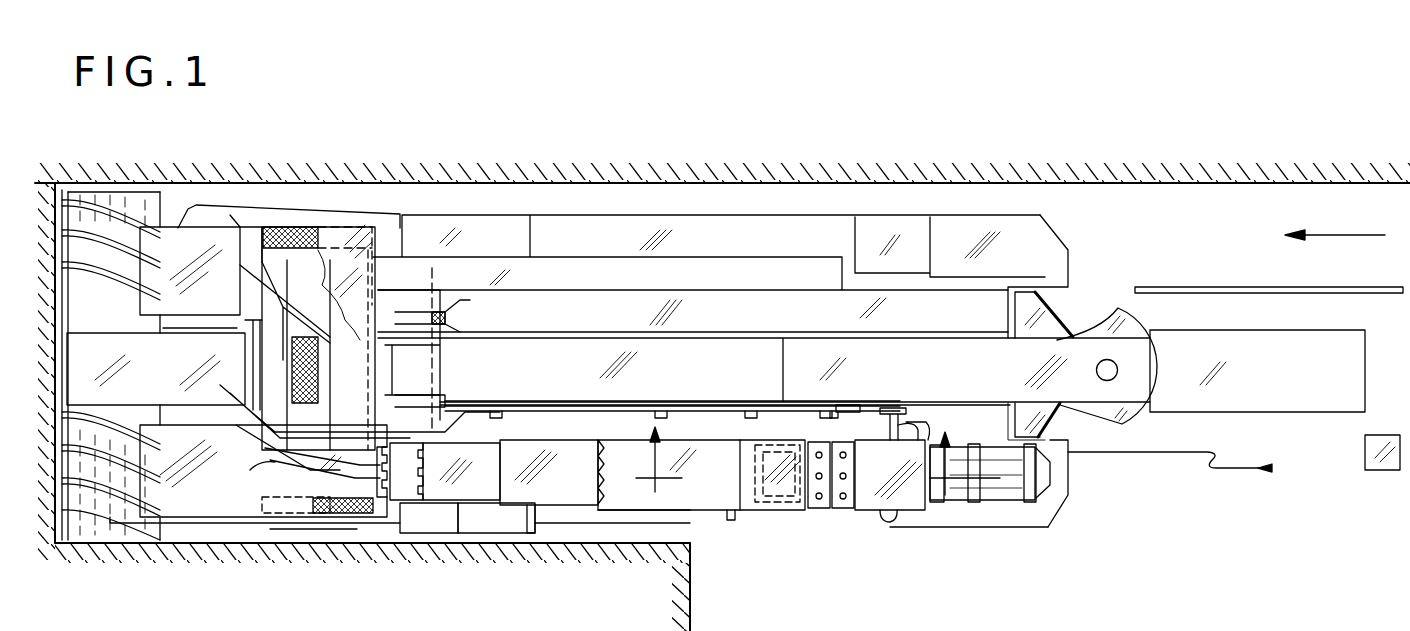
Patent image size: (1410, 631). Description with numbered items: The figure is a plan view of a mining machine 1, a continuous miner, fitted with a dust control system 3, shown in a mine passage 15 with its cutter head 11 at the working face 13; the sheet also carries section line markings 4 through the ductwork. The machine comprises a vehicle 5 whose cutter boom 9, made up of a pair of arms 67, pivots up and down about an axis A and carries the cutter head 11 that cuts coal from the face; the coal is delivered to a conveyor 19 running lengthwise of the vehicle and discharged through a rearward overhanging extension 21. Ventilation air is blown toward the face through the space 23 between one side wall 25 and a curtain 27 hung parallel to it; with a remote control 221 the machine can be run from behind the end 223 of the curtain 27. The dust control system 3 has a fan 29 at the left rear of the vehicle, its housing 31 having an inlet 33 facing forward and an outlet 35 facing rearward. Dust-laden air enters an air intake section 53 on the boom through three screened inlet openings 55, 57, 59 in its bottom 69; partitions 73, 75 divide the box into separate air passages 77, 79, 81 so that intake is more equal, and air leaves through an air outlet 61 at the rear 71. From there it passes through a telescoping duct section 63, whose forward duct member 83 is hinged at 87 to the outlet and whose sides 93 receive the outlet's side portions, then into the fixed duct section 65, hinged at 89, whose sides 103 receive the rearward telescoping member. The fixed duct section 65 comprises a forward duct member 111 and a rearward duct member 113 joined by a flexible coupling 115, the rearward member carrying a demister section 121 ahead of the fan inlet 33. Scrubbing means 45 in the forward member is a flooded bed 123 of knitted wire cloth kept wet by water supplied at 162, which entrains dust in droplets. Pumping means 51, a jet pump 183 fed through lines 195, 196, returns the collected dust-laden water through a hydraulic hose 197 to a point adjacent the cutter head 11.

The mining machine 1 is at (1068, 250).
The dust control system 3 is at (236, 503).
The section line 4- 4 is at (817, 467).
The vehicle 5 is at (743, 212).
The cutter boom 9 is at (225, 218).
The cutter head 11 is at (130, 195).
The working face 13 is at (60, 197).
The mine passage 15 is at (215, 203).
The conveyor 19 is at (723, 373).
The rearward overhanging extension 21 is at (1253, 385).
The space 23 is at (1333, 213).
The side wall 25 is at (648, 186).
The curtain 27 is at (1333, 294).
The fan 29 is at (1010, 520).
The fan housing 31 is at (982, 512).
The fan inlet 33 is at (925, 505).
The fan outlet 35 is at (1043, 472).
The scrubbing means 45 is at (778, 520).
The pumping means 51 is at (896, 414).
The air intake section 53 is at (376, 228).
The inlet opening 55 is at (300, 238).
The inlet opening 57 is at (290, 358).
The inlet opening 59 is at (345, 527).
The air outlet 61 is at (388, 503).
The telescoping duct section 63 is at (527, 515).
The fixed duct section 65 is at (625, 515).
The arms 67 is at (400, 320).
The bottom 69 is at (272, 272).
The rear 71 is at (386, 378).
The partition 73 is at (307, 315).
The partition 75 is at (262, 474).
The air passage 77 is at (339, 381).
The air passage 79 is at (282, 456).
The air passage 81 is at (325, 522).
The forward duct member 83 is at (496, 518).
The hinge 87 is at (412, 517).
The hinge 89 is at (598, 487).
The sides 93 is at (505, 432).
The sides 103 is at (674, 440).
The forward duct member 111 is at (700, 440).
The rearward duct member 113 is at (845, 512).
The flexible coupling 115 is at (824, 512).
The demister section 121 is at (905, 515).
The bed 123 is at (744, 448).
The water supply 162 is at (731, 522).
The pump 183 is at (868, 410).
The line 195 is at (872, 432).
The line 196 is at (922, 428).
The hydraulic hose 197 is at (235, 395).
The remote control 221 is at (1375, 472).
The end 223 is at (1137, 290).
The axis A is at (440, 368).